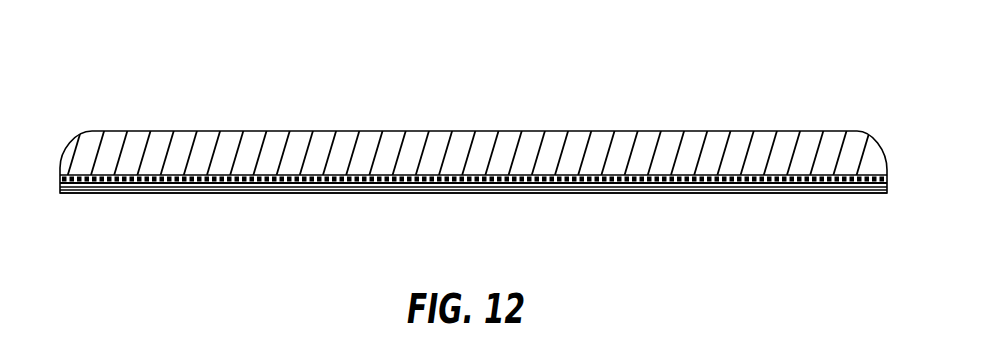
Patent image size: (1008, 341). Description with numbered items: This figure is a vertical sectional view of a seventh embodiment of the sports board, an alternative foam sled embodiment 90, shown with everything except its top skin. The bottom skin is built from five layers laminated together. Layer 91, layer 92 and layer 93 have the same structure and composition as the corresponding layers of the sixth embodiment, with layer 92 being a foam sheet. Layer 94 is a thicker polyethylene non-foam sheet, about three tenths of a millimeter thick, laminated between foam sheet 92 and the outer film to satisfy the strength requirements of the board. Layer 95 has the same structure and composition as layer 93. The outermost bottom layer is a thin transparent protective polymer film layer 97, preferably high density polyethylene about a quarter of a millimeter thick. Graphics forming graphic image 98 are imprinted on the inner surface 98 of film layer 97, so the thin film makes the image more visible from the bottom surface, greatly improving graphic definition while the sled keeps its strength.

The foam sled embodiment 90 is at (148, 70).
The layer 91 is at (727, 157).
The foam sheet layer 92 is at (640, 183).
The layer 93 is at (553, 183).
The polyethylene non-foam sheet 94 is at (404, 189).
The layer 95 is at (328, 189).
The polymer non-foam film layer 97 is at (280, 192).
The graphic image on inner surface 98 is at (250, 186).